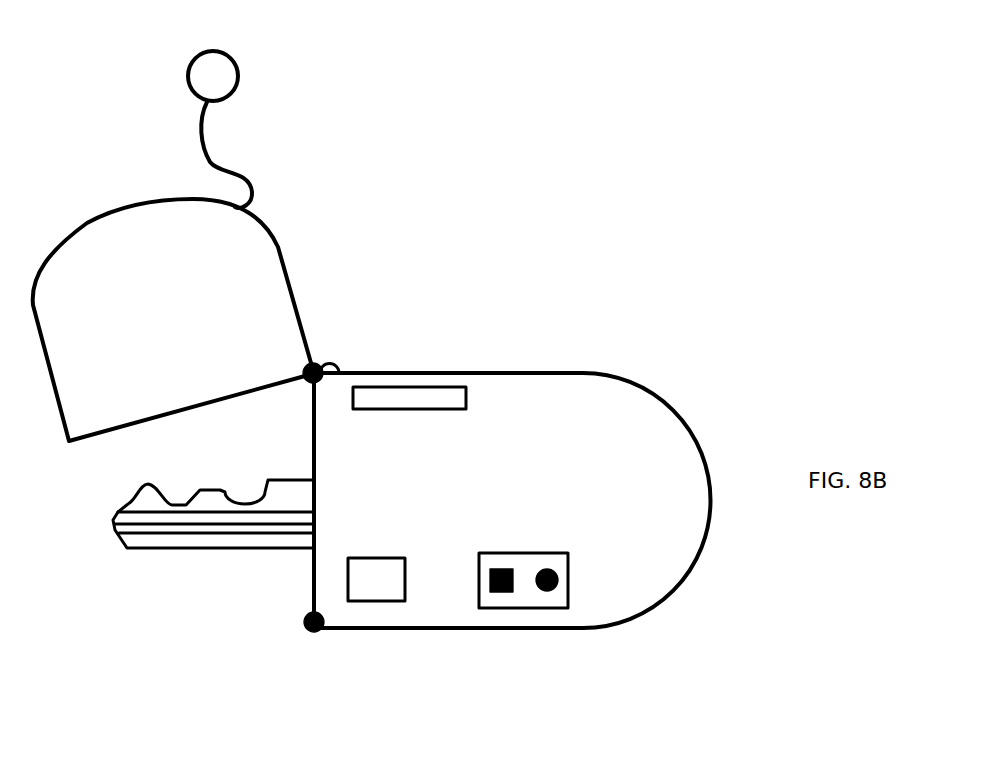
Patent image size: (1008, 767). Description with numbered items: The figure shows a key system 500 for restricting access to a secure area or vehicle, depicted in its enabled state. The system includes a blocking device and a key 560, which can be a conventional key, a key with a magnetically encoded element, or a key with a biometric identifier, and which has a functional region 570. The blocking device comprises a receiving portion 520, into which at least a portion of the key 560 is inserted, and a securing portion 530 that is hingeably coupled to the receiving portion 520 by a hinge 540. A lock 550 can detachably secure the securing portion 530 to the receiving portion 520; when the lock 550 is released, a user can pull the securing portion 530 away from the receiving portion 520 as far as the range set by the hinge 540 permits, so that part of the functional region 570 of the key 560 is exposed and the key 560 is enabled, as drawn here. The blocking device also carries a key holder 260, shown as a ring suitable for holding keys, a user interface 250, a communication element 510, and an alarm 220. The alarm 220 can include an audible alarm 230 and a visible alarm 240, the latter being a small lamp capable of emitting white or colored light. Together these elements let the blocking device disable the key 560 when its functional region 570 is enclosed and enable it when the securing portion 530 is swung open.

The key holder 260 is at (240, 62).
The securing portion 530 is at (227, 237).
The hinge 540 is at (313, 365).
The user interface 250 is at (408, 387).
The key system 500 is at (604, 285).
The receiving portion 520 is at (667, 403).
The functional region 570 is at (180, 507).
The key 560 is at (283, 505).
The lock 550 is at (308, 622).
The communication element 510 is at (362, 601).
The alarm 220 is at (523, 608).
The audible alarm 230 is at (490, 592).
The visible alarm 240 is at (558, 580).